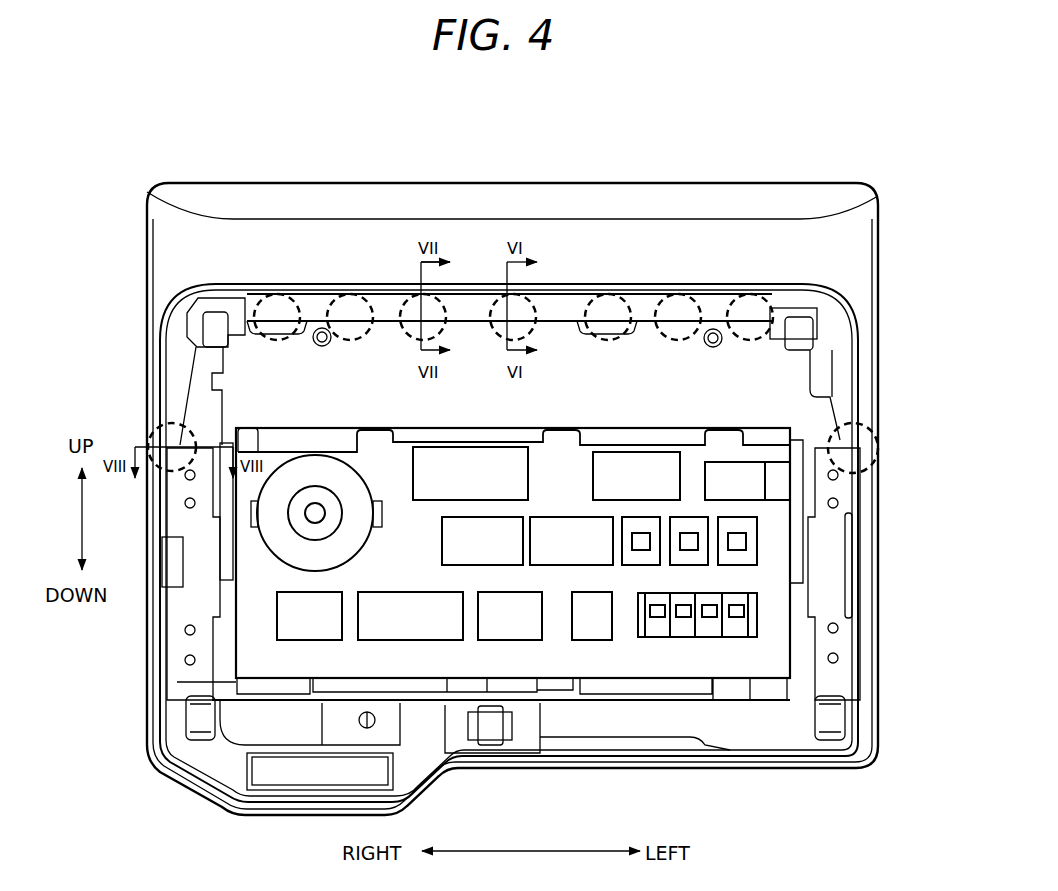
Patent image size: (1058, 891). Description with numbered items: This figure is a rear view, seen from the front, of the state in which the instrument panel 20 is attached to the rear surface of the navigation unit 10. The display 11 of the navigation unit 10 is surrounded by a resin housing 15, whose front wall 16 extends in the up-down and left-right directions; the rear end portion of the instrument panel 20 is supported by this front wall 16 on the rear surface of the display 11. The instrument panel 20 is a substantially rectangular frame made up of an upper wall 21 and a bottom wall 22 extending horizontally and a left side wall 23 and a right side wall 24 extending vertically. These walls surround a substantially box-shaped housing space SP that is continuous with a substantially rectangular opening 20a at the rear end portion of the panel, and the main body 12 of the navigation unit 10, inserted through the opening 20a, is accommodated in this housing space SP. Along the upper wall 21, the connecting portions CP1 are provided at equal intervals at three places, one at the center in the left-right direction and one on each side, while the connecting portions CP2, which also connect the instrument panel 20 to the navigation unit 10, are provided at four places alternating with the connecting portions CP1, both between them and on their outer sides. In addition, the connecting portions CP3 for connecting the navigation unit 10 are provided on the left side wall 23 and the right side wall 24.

The navigation unit 10 is at (886, 218).
The display 11 is at (810, 182).
The main body 12 is at (752, 667).
The housing 15 is at (655, 200).
The front wall 16 is at (733, 367).
The instrument panel 20 is at (877, 332).
The opening 20a is at (198, 407).
The upper wall 21 is at (310, 283).
The bottom wall 22 is at (640, 765).
The left side wall 23 is at (868, 615).
The right side wall 24 is at (165, 683).
The connecting portion CP1 is at (358, 299).
The connecting portion CP2 is at (266, 298).
The connecting portion CP3 is at (147, 433).
The housing space SP is at (772, 368).